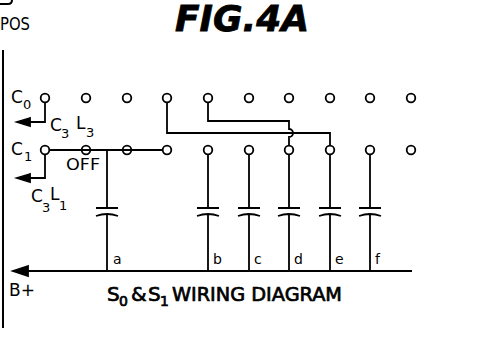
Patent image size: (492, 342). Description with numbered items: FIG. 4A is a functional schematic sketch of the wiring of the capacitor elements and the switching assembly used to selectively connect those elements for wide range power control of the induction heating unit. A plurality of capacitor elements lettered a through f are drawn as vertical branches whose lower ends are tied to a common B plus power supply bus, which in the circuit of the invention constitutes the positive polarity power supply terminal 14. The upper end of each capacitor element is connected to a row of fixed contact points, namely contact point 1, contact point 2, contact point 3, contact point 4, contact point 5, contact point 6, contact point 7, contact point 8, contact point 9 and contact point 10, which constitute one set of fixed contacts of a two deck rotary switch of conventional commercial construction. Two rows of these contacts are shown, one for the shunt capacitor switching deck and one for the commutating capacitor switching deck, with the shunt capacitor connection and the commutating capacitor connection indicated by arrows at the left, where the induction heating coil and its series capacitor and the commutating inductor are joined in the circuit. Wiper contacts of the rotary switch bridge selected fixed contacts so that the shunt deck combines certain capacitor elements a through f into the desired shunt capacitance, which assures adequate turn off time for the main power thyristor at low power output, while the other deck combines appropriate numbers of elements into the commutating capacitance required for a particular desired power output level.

The contact point 1 is at (45, 103).
The contact point 2 is at (86, 103).
The contact point 3 is at (127, 103).
The contact point 4 is at (167, 103).
The contact point 5 is at (208, 103).
The contact point 6 is at (249, 103).
The contact point 7 is at (289, 103).
The contact point 8 is at (330, 103).
The contact point 9 is at (370, 103).
The contact point 10 is at (411, 103).
The power supply terminal 14 is at (357, 272).